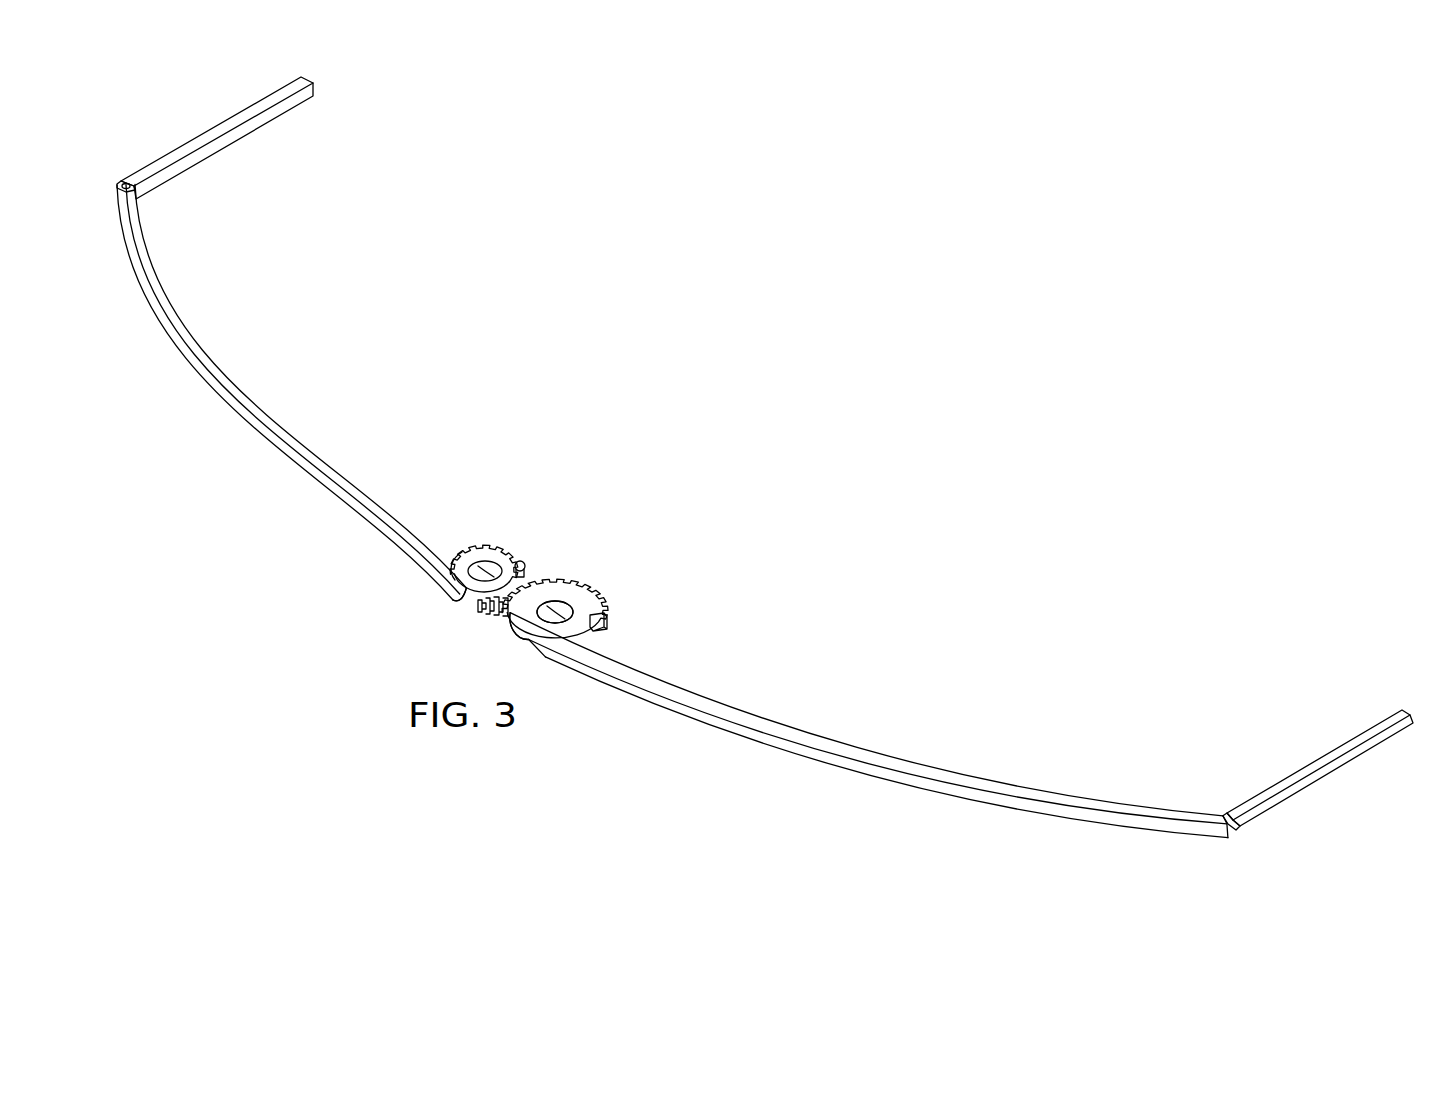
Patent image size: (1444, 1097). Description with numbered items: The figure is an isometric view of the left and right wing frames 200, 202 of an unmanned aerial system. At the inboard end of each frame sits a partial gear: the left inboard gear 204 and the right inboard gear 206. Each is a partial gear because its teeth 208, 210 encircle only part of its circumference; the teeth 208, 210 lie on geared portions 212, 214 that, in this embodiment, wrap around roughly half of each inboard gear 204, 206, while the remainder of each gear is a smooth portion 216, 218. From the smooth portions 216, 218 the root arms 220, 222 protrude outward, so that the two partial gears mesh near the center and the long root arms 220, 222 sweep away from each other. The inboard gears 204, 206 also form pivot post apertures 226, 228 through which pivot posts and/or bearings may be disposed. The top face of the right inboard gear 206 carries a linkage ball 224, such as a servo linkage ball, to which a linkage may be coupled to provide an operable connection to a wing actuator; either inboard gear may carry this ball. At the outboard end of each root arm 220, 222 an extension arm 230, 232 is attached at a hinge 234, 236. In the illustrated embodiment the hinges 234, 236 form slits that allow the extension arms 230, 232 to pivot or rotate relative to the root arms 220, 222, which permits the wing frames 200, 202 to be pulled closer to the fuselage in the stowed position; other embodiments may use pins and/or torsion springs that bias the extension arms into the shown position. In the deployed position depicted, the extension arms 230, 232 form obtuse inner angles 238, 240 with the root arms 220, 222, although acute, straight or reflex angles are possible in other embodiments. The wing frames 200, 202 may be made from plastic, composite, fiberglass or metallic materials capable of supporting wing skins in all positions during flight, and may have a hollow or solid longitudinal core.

The left wing frame 200 is at (869, 725).
The root arm 220 is at (843, 765).
The right wing frame 202 is at (291, 392).
The root arm 222 is at (218, 400).
The left inboard gear 204 is at (528, 620).
The right inboard gear 206 is at (460, 584).
The teeth 208 is at (574, 583).
The geared portion 212 is at (590, 588).
The teeth 210 is at (476, 525).
The geared portion 214 is at (490, 541).
The smooth portion 216 is at (603, 627).
The smooth portion 218 is at (462, 552).
The linkage ball 224 is at (520, 560).
The pivot post aperture 226 is at (556, 616).
The pivot post aperture 228 is at (480, 578).
The extension arm 230 is at (1373, 748).
The extension arm 232 is at (247, 110).
The hinge 234 is at (1240, 826).
The hinge 236 is at (124, 183).
The obtuse inner angle 238 is at (1290, 770).
The obtuse inner angle 240 is at (155, 242).